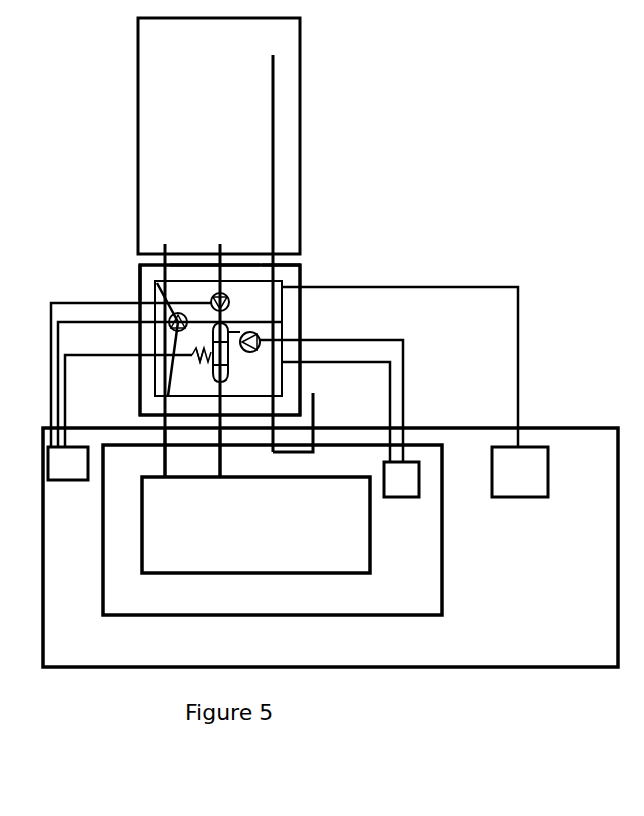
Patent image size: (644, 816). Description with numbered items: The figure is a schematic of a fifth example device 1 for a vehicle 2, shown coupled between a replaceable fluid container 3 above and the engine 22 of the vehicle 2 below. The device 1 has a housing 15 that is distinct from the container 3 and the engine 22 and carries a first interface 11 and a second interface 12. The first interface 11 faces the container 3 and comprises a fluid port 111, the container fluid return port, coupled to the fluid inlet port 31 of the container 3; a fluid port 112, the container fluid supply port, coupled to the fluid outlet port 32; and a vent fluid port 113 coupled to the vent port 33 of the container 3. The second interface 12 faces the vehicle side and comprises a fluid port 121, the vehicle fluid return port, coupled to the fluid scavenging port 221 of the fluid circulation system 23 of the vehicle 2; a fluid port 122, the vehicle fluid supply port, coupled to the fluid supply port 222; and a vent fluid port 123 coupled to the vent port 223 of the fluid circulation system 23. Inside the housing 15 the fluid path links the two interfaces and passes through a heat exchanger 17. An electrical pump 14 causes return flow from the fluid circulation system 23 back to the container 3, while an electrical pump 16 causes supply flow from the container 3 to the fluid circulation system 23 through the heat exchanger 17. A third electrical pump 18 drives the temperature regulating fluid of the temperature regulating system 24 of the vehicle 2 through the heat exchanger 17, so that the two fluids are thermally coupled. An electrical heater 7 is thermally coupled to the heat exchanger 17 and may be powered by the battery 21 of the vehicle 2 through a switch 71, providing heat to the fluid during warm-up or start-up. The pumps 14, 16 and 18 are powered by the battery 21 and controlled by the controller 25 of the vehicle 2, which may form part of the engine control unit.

The device 1 is at (288, 297).
The vehicle 2 is at (330, 547).
The replaceable fluid container 3 is at (219, 136).
The electrical heater 7 is at (196, 368).
The switch 71 is at (198, 358).
The first interface 11 is at (283, 268).
The second interface 12 is at (140, 415).
The electrical pump 14 is at (168, 318).
The housing 15 is at (170, 313).
The electrical pump 16 is at (155, 280).
The heat exchanger 17 is at (228, 376).
The electrical pump 18 is at (262, 335).
The battery 21 is at (68, 463).
The engine 22 is at (272, 530).
The fluid circulation system 23 is at (256, 525).
The temperature regulating system 24 is at (401, 479).
The controller 25 is at (520, 472).
The fluid inlet port 31 is at (165, 247).
The fluid outlet port 32 is at (220, 245).
The vent port 33 is at (276, 253).
The fluid port 111 is at (148, 263).
The fluid port 112 is at (215, 263).
The vent fluid port 113 is at (278, 264).
The fluid port 121 is at (155, 392).
The fluid port 122 is at (235, 390).
The vent fluid port 123 is at (282, 392).
The fluid scavenging port 221 is at (162, 452).
The fluid supply port 222 is at (215, 452).
The vent port 223 is at (273, 450).